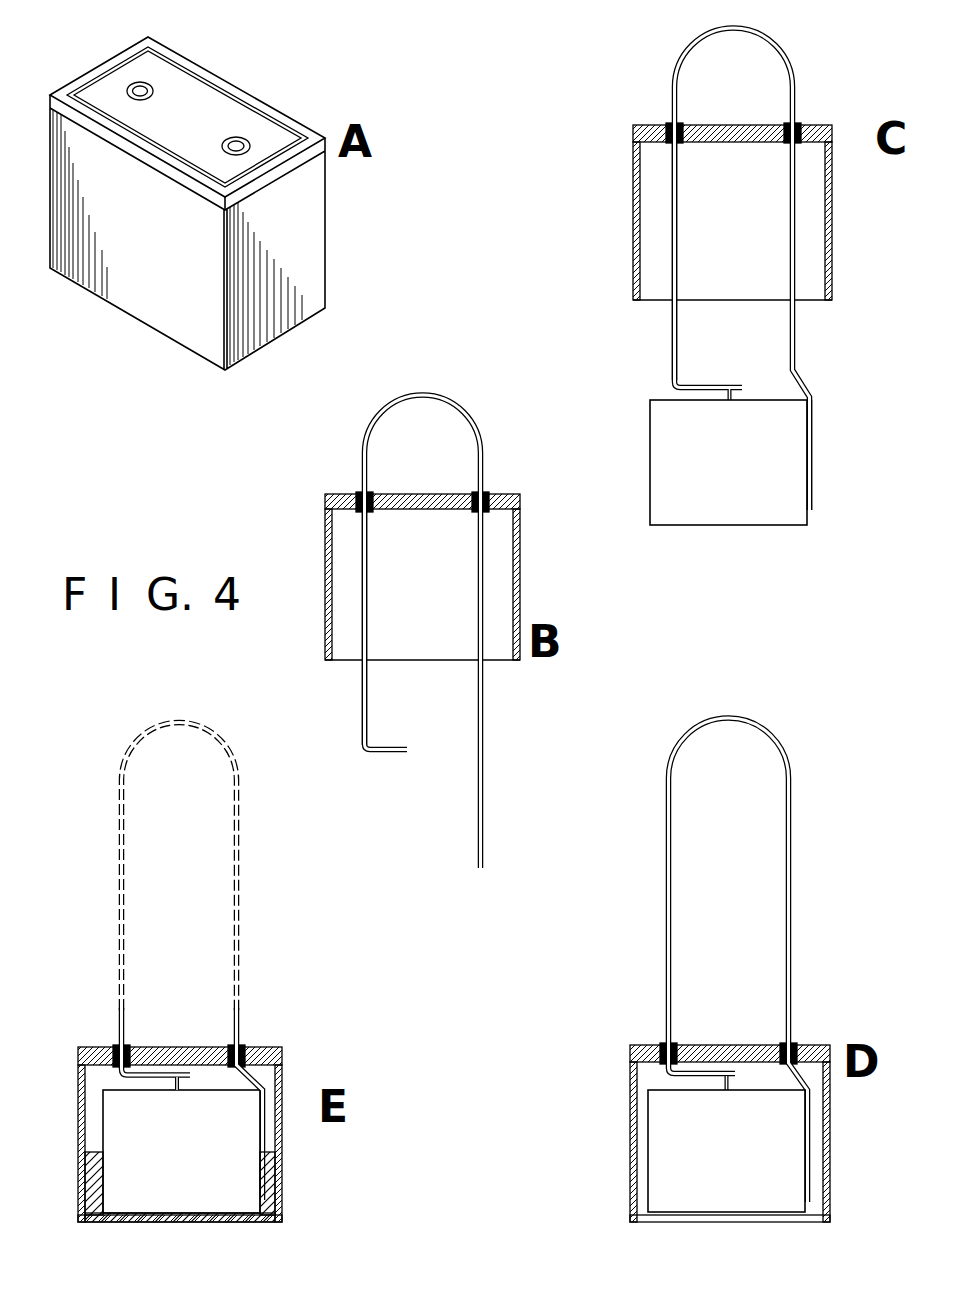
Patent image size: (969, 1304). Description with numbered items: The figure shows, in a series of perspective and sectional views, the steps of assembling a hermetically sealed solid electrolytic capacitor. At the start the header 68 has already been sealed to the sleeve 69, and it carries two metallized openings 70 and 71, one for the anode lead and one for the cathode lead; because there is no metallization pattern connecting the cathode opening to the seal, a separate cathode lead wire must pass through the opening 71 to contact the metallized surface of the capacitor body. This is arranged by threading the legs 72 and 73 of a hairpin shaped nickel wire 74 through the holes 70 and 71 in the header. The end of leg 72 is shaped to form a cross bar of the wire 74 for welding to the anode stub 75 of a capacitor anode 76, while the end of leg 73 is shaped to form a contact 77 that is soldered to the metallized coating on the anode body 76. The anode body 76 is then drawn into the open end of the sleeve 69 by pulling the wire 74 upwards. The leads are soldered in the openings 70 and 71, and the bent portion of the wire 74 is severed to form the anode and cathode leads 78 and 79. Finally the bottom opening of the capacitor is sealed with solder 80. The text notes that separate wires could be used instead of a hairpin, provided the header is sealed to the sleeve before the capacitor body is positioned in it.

The header 68 is at (232, 117).
The sleeve 69 is at (313, 170).
The metallized opening 70 is at (143, 78).
The metallized opening 71 is at (238, 140).
The leg 72 is at (360, 750).
The leg 73 is at (485, 777).
The hairpin shaped nickel wire 74 is at (458, 395).
The anode stub 75 is at (735, 395).
The capacitor anode 76 is at (737, 472).
The contact 77 is at (812, 463).
The anode lead 78 is at (123, 1018).
The cathode lead 79 is at (240, 1018).
The solder 80 is at (270, 1173).